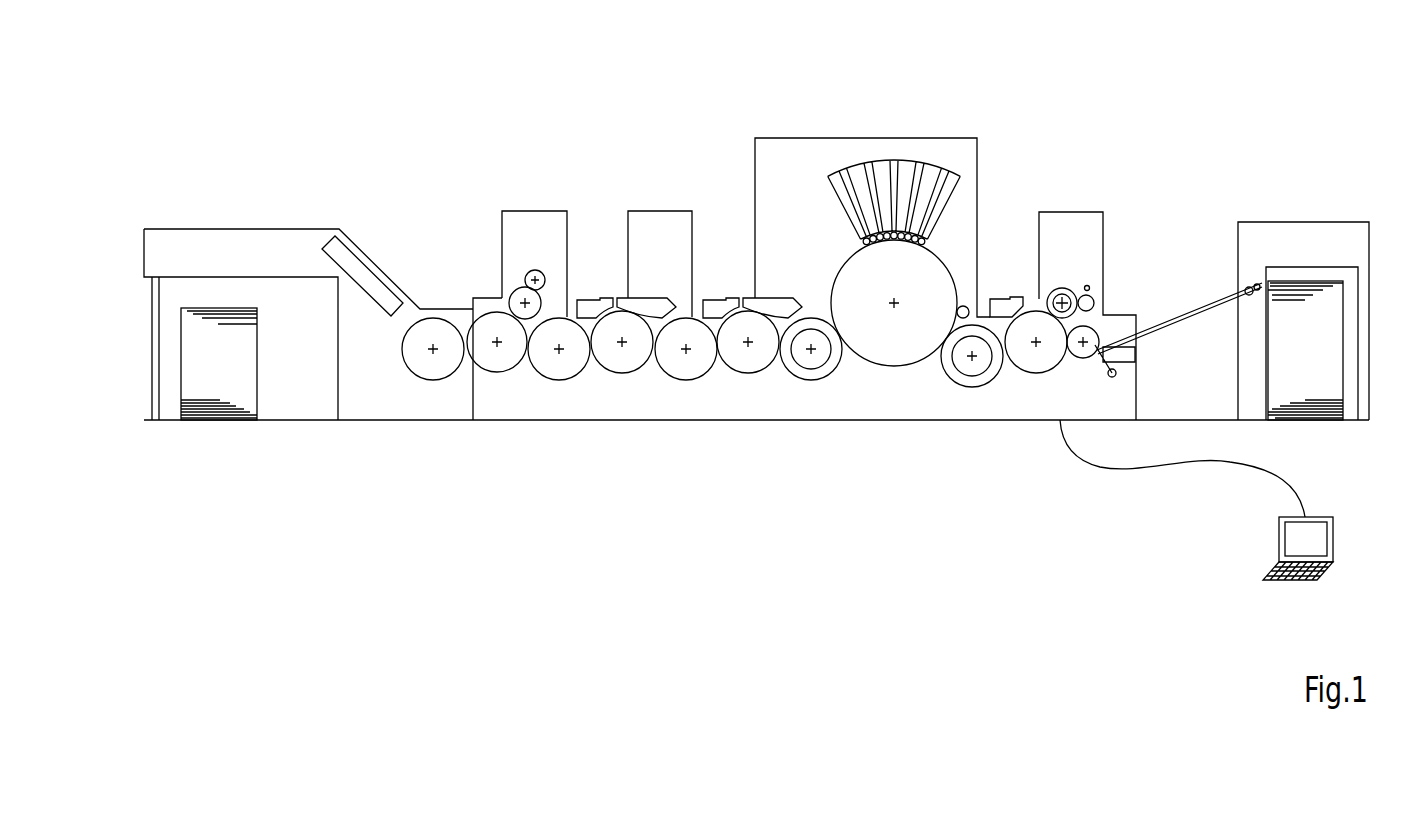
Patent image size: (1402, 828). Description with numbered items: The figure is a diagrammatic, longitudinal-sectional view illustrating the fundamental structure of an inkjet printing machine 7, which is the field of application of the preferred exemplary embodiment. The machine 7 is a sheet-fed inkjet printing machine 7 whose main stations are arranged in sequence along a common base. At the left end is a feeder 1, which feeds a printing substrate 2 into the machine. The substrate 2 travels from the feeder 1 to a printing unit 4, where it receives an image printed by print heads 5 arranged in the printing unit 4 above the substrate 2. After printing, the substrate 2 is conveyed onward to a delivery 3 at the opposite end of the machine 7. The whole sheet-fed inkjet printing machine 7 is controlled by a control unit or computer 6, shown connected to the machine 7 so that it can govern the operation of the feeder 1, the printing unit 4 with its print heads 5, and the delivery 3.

The feeder 1 is at (252, 253).
The printing substrate 2 is at (945, 260).
The delivery 3 is at (1313, 278).
The printing unit 4 is at (808, 138).
The print heads 5 is at (893, 158).
The control unit or computer 6 is at (1280, 541).
The inkjet printing machine 7 is at (1176, 66).